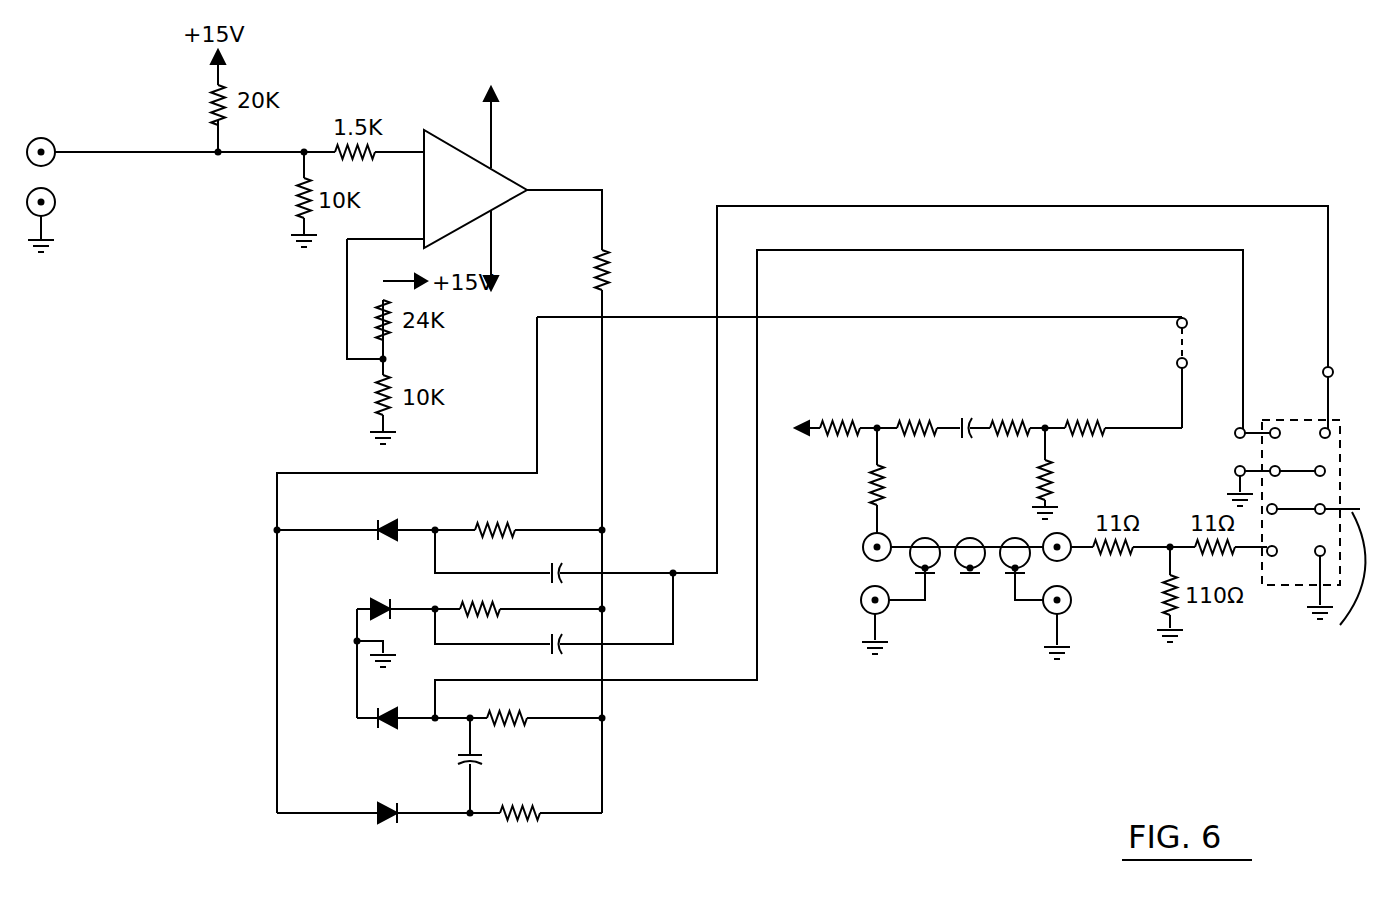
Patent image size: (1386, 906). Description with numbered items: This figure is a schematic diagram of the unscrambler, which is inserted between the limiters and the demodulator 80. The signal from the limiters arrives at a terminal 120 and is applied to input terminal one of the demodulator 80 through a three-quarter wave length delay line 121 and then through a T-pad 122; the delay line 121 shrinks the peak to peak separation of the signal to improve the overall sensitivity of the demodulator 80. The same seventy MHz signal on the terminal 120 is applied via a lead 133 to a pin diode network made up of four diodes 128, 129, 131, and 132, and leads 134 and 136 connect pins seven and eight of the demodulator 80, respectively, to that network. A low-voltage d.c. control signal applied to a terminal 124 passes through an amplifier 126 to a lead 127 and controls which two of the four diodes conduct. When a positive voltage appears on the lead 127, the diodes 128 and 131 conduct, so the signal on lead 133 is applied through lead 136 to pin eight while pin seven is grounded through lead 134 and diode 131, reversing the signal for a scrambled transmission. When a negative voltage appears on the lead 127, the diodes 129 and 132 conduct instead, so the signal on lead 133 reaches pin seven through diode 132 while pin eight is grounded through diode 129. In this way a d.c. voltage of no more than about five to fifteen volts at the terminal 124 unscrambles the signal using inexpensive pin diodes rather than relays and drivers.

The terminal 124 is at (44, 148).
The amplifier 126 is at (508, 170).
The lead 127 is at (605, 222).
The diode 128 is at (383, 524).
The diode 129 is at (388, 598).
The diode 131 is at (383, 713).
The diode 132 is at (385, 806).
The lead 133 is at (1055, 318).
The lead 134 is at (1243, 302).
The lead 136 is at (1328, 305).
The terminal 120 is at (794, 424).
The three-quarter wave length delay line 121 is at (985, 601).
The T-pad 122 is at (1115, 604).
The demodulator 80 is at (1342, 448).